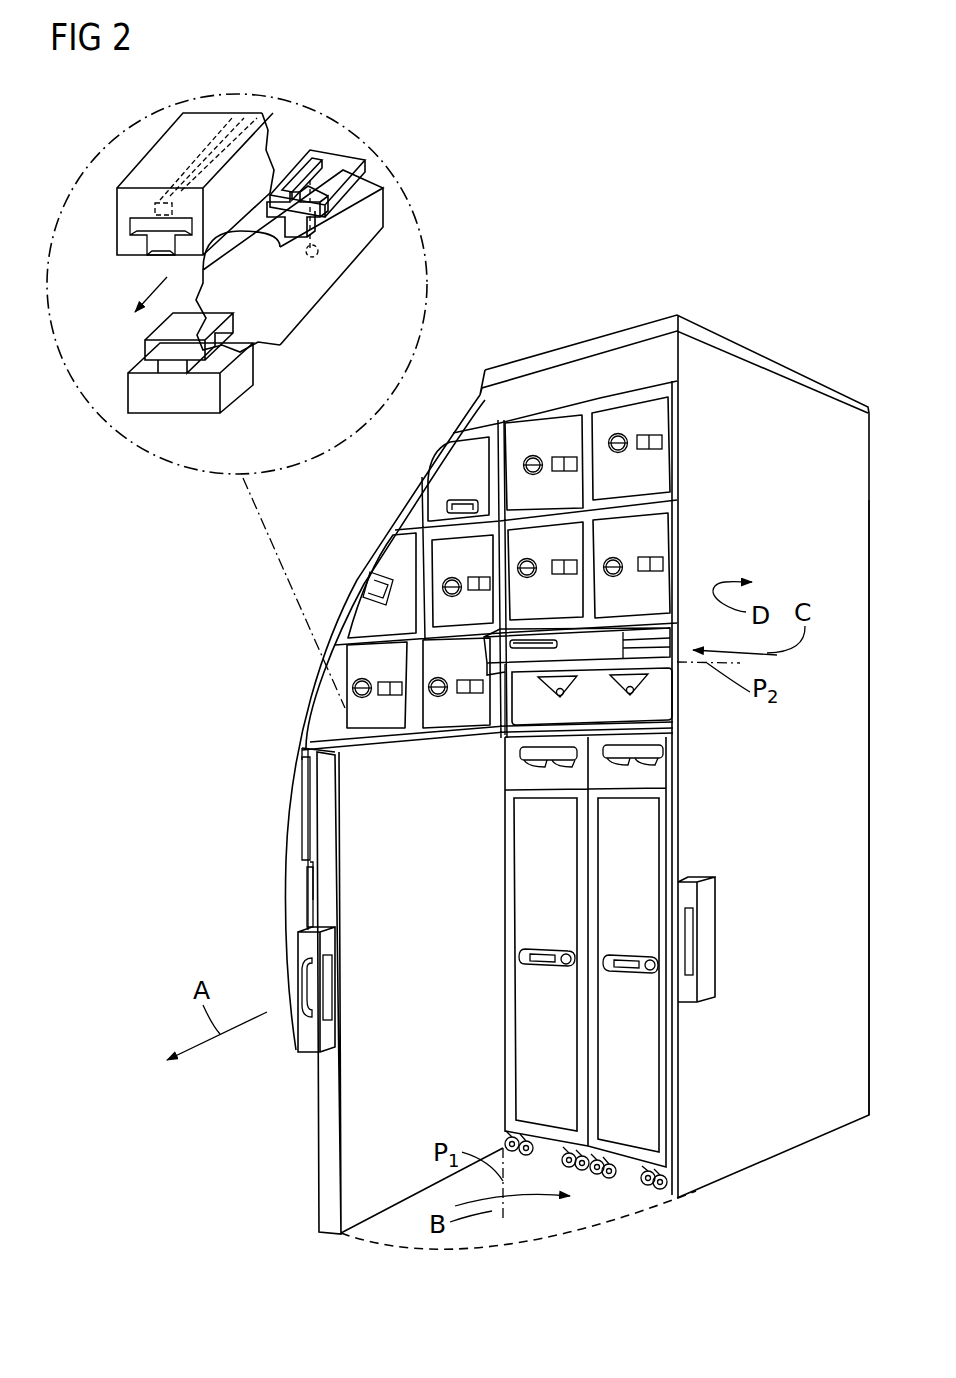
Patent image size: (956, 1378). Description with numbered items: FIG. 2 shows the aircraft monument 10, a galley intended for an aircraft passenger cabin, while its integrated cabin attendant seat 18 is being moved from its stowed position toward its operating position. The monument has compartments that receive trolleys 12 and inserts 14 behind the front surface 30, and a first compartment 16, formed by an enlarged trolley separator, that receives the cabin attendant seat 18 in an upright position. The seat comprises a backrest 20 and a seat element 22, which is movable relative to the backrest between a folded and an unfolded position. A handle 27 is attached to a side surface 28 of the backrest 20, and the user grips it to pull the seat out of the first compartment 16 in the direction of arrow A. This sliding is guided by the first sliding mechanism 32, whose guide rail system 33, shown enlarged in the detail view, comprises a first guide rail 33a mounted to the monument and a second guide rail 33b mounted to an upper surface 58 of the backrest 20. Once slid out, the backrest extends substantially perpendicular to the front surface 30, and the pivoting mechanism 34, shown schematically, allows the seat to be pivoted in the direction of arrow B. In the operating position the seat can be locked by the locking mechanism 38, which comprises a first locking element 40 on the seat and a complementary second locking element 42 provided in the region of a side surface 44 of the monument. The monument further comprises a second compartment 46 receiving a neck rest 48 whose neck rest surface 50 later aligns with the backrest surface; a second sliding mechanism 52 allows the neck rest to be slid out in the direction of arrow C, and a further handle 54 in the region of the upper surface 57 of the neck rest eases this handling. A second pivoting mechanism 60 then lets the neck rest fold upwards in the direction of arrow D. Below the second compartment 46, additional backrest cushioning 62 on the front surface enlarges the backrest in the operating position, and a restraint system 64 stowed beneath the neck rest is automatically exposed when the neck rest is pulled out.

The aircraft monument 10 is at (763, 313).
The trolleys 12 is at (548, 1122).
The inserts 14 is at (452, 458).
The first compartment 16 is at (507, 1016).
The cabin attendant seat 18 is at (347, 837).
The backrest 20 is at (345, 887).
The seat element 22 is at (313, 905).
The handle 27 is at (300, 985).
The side surface 28 is at (328, 1132).
The front surface 30 is at (670, 497).
The first sliding mechanism 32 is at (308, 142).
The guide rail system 33 is at (133, 343).
The first guide rail 33a is at (210, 122).
The second guide rail 33b is at (303, 308).
The pivoting mechanism 34 is at (327, 242).
The locking mechanism 38 is at (732, 902).
The first locking element 40 is at (330, 1032).
The second locking element 42 is at (707, 938).
The side surface 44 is at (775, 1142).
The second compartment 46 is at (673, 650).
The neck rest 48 is at (633, 632).
The neck rest surface 50 is at (512, 663).
The second sliding mechanism 52 is at (653, 637).
The further handle 54 is at (570, 678).
The upper surface 57 is at (537, 633).
The upper surface 58 is at (330, 733).
The second pivoting mechanism 60 is at (578, 650).
The additional backrest cushioning 62 is at (660, 700).
The restraint system 64 is at (556, 708).